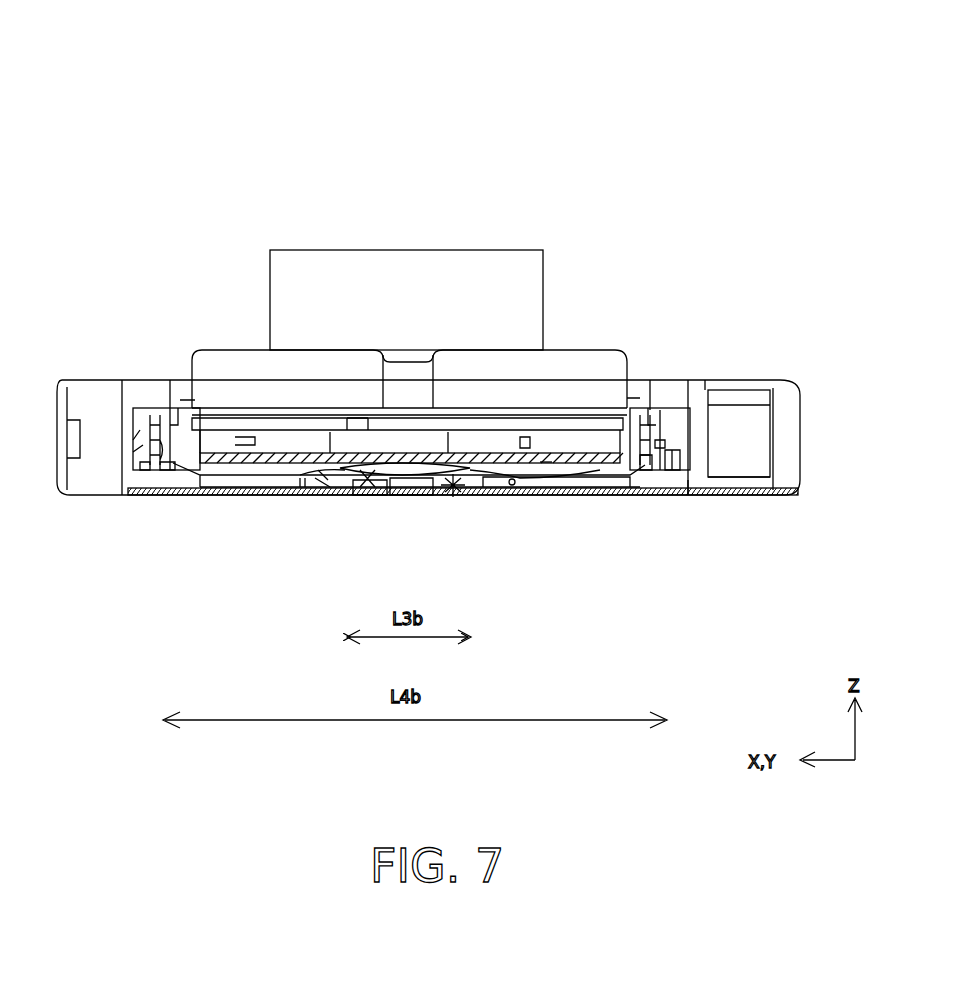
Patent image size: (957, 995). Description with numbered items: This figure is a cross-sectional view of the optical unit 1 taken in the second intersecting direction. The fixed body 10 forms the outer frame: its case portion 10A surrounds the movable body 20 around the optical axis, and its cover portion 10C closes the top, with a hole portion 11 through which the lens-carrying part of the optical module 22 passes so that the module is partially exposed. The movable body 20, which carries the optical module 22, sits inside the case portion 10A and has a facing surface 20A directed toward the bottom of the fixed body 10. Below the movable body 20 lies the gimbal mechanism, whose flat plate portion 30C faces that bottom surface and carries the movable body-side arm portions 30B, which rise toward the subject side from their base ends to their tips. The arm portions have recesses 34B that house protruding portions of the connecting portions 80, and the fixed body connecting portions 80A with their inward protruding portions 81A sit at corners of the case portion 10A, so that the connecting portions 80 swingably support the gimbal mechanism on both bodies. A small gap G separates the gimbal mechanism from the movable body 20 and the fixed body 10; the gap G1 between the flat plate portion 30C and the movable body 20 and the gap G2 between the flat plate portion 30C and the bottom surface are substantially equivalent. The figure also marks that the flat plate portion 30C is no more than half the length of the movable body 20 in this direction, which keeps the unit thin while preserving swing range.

The optical unit 1 is at (840, 66).
The fixed body 10 is at (780, 380).
The case portion 10A is at (740, 427).
The cover portion 10C is at (710, 378).
The hole portion 11 is at (612, 350).
The movable body 20 is at (262, 348).
The facing surface 20A is at (546, 462).
The optical module 22 is at (543, 250).
The movable body-side arm portions 30B is at (275, 463).
The flat plate portion 30C is at (422, 463).
The recesses 34B is at (170, 425).
The connecting portions 80 is at (150, 425).
The fixed body connecting portions 80A is at (145, 468).
The protruding portions 81A is at (168, 462).
The gap G is at (307, 463).
The gap G1 is at (370, 463).
The gap G2 is at (477, 463).